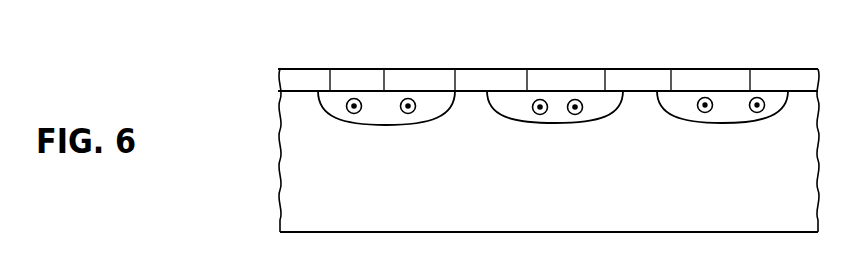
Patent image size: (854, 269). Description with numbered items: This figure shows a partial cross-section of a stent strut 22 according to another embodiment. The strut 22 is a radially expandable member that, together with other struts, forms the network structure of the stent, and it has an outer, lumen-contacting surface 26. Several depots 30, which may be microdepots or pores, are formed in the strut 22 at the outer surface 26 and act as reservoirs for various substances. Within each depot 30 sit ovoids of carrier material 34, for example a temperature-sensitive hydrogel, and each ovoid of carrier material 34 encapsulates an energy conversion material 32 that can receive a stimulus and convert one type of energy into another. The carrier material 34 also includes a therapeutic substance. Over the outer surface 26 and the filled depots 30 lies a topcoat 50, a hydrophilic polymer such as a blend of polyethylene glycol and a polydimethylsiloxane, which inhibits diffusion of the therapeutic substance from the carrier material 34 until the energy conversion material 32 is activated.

The strut 22 is at (248, 145).
The outer surface 26 is at (550, 57).
The topcoat 50 is at (472, 77).
The depot 30 is at (552, 140).
The energy conversion material 32 is at (703, 113).
The carrier material 34 is at (758, 97).